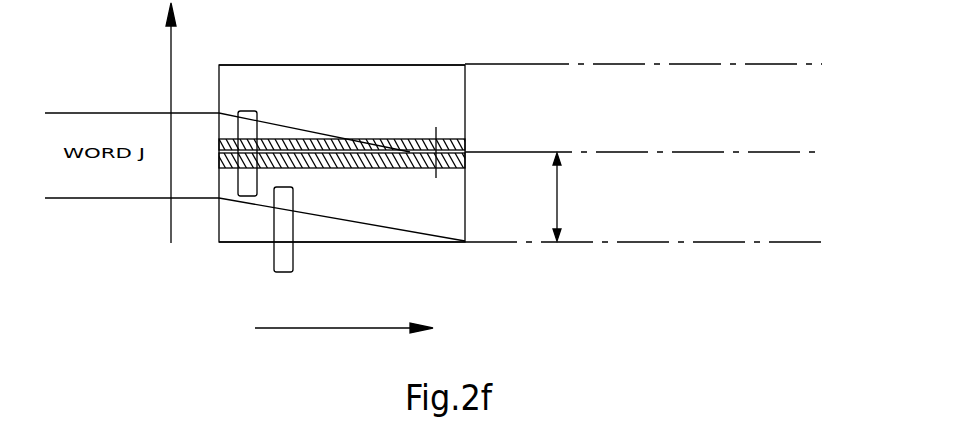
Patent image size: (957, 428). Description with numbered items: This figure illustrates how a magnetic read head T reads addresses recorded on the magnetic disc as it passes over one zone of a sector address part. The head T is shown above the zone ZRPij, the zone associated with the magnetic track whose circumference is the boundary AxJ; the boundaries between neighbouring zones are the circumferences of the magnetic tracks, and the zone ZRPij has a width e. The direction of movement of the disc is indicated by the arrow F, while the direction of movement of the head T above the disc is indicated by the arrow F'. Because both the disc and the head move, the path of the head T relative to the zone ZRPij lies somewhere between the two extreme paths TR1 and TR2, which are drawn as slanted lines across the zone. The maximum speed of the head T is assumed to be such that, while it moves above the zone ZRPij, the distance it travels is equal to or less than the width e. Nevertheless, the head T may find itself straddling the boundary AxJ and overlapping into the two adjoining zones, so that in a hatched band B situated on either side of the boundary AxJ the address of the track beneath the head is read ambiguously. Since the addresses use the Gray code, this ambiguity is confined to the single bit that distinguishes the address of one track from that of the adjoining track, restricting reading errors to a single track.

The magnetic read head T is at (249, 111).
The first extreme path TR1 is at (421, 232).
The second extreme path TR2 is at (262, 121).
The band B is at (465, 152).
The width of zone ZRPij e is at (568, 197).
The direction of movement of disc F is at (344, 341).
The direction of movement of head F' is at (188, 123).
The zone associated with track j ZRPij is at (233, 243).
The circumference of track j AxJ is at (643, 132).